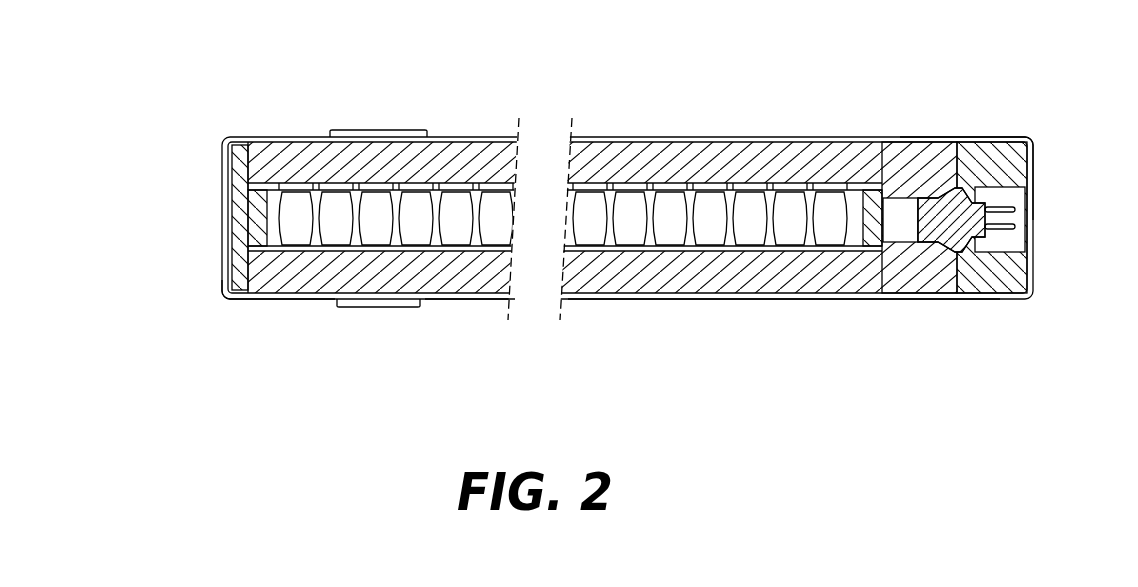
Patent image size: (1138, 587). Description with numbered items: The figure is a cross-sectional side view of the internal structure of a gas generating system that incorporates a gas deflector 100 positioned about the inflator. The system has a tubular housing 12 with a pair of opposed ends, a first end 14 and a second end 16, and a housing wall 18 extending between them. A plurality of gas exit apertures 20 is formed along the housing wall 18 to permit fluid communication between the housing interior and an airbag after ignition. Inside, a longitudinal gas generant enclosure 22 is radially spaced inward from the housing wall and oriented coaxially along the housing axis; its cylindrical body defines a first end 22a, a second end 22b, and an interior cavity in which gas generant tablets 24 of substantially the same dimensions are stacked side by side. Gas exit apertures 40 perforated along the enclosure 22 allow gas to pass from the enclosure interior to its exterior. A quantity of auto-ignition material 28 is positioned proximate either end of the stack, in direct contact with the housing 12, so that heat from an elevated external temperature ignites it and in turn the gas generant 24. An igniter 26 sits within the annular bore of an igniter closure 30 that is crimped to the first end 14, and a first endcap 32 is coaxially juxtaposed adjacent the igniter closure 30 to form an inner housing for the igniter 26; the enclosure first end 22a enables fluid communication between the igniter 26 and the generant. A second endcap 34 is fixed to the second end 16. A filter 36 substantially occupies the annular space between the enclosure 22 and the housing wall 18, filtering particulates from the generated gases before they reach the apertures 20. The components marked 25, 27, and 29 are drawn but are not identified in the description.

The tubular housing 12 is at (306, 300).
The first end of housing 14 is at (1010, 135).
The second end of housing 16 is at (230, 135).
The housing wall 18 is at (477, 300).
The gas exit apertures 20 is at (372, 307).
The gas generant enclosure 22 is at (693, 258).
The enclosure first end 22a is at (858, 257).
The enclosure second end 22b is at (272, 257).
The gas generant tablets 24 is at (713, 188).
The lens 25 is at (475, 198).
The igniter 26 is at (962, 192).
The lens 27 is at (612, 242).
The auto-ignition material 28 is at (245, 225).
The spacer 29 is at (247, 203).
The igniter closure 30 is at (1002, 297).
The first endcap 32 is at (922, 297).
The second endcap 34 is at (231, 296).
The filter 36 is at (800, 300).
The enclosure gas exit apertures 40 is at (305, 183).
The gas deflector 100 is at (375, 130).